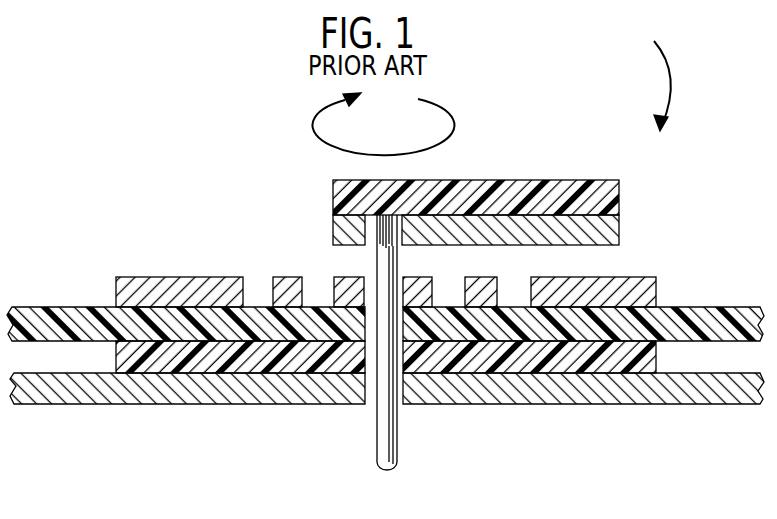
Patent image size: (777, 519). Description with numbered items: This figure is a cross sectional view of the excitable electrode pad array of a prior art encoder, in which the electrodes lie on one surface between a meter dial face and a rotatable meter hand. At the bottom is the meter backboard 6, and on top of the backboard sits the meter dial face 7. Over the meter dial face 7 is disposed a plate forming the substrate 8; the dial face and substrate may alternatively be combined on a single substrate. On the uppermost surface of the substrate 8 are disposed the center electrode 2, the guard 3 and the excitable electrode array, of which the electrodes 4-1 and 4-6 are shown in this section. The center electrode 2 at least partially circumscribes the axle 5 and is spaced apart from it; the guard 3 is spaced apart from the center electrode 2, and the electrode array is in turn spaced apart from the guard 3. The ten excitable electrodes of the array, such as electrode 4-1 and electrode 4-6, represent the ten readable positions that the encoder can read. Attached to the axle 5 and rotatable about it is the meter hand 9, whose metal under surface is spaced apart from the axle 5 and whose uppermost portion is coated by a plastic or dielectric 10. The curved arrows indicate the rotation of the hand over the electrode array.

The center electrode 2 is at (349, 278).
The guard 3 is at (290, 278).
The excitable electrode 4-1 is at (119, 278).
The excitable electrode 4-6 is at (651, 277).
The axle 5 is at (398, 447).
The meter backboard 6 is at (60, 404).
The meter dial face 7 is at (170, 367).
The substrate 8 is at (722, 307).
The hand 9 is at (620, 231).
The dielectric 10 is at (620, 196).